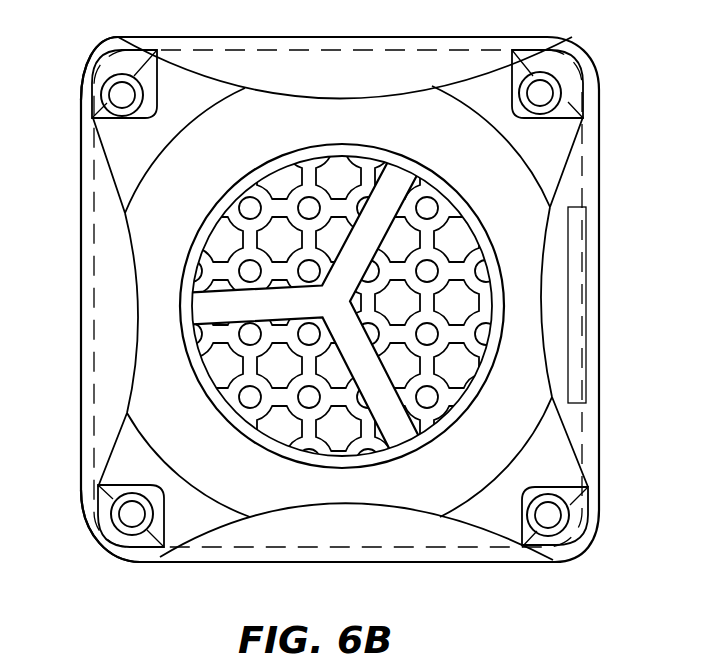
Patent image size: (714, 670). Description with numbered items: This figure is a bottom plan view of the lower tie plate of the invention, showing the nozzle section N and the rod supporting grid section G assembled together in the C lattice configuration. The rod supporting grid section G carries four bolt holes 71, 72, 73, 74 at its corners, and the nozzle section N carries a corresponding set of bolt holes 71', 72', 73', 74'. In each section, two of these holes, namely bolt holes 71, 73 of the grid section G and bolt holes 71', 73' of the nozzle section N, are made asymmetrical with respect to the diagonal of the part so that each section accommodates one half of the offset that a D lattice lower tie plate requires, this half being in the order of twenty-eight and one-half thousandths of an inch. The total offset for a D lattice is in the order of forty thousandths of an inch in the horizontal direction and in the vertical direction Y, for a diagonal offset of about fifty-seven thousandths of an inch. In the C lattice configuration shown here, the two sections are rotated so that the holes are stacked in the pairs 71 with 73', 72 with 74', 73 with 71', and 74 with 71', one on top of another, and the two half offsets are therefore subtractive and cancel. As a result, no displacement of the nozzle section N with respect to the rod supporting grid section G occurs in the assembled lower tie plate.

The bolt hole 71 is at (111, 65).
The bolt hole 71' is at (554, 552).
The bolt hole 72 is at (104, 537).
The bolt hole 72' is at (579, 90).
The bolt hole 73 is at (586, 505).
The bolt hole 73' is at (72, 81).
The bolt hole 74 is at (569, 72).
The bolt hole 74' is at (148, 548).
The rod supporting grid section G is at (235, 344).
The vertical direction Y is at (345, 301).
The nozzle section N is at (532, 427).